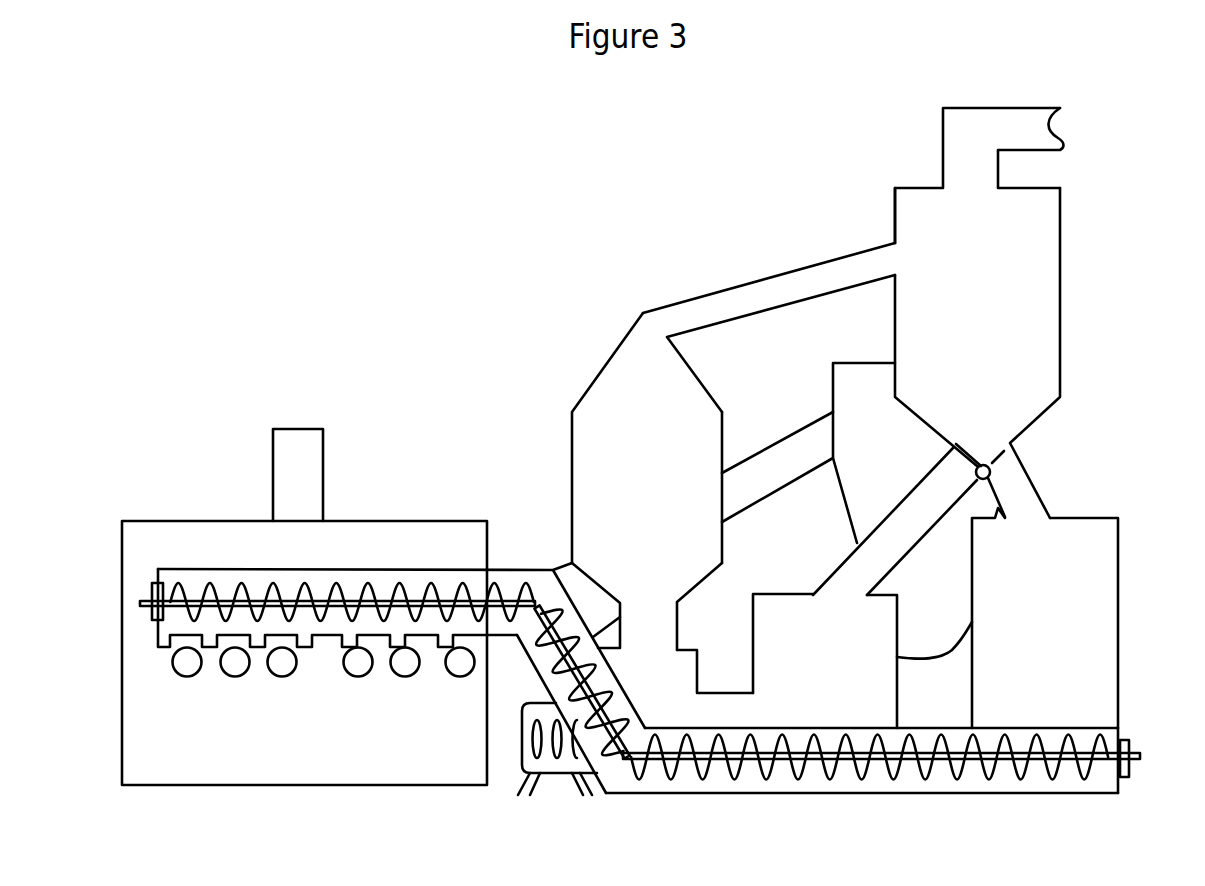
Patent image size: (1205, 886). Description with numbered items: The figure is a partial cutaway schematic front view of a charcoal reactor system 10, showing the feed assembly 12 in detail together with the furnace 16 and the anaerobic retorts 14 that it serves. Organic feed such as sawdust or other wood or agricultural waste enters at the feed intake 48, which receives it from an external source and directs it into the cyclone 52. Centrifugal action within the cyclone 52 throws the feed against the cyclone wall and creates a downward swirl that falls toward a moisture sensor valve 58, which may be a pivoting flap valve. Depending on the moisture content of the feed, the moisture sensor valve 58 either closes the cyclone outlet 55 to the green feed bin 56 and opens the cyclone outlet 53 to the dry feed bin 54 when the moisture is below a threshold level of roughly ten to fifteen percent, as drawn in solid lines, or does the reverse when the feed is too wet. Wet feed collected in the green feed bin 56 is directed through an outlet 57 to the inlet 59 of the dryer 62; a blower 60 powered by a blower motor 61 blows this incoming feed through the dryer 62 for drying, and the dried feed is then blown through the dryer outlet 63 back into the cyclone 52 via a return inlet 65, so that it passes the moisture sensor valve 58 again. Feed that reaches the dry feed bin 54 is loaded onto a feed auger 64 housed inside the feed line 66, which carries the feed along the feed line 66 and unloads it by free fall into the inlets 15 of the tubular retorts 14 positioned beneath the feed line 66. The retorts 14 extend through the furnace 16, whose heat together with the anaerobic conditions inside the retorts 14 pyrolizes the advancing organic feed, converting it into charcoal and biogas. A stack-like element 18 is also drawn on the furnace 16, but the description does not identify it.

The charcoal reactor system 10 is at (615, 882).
The feed assembly 12 is at (713, 212).
The anaerobic retorts 14 is at (170, 663).
The inlets 15 is at (170, 643).
The furnace 16 is at (143, 521).
The dryer exhaust stack 18 is at (323, 447).
The feed intake 48 is at (1047, 150).
The cyclone 52 is at (1060, 257).
The cyclone outlet 53 is at (1010, 445).
The dry feed bin 54 is at (1118, 625).
The cyclone outlet 55 is at (930, 463).
The green feed bin 56 is at (898, 700).
The outlet 57 is at (750, 683).
The moisture sensor valve 58 is at (992, 478).
The inlet 59 is at (714, 592).
The blower 60 is at (697, 677).
The blower motor 61 is at (532, 702).
The dryer 62 is at (593, 380).
The dryer outlet 63 is at (643, 312).
The feed auger 64 is at (1090, 773).
The return inlet 65 is at (895, 245).
The feed line 66 is at (410, 567).